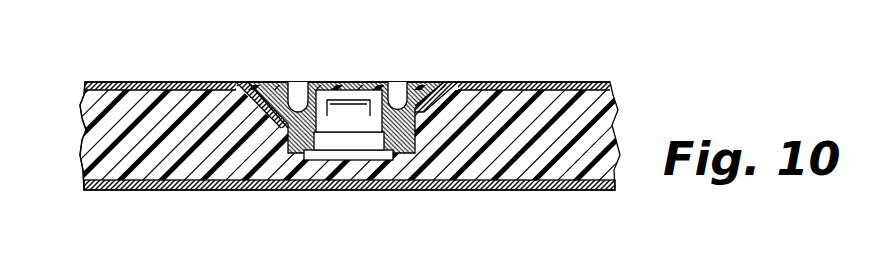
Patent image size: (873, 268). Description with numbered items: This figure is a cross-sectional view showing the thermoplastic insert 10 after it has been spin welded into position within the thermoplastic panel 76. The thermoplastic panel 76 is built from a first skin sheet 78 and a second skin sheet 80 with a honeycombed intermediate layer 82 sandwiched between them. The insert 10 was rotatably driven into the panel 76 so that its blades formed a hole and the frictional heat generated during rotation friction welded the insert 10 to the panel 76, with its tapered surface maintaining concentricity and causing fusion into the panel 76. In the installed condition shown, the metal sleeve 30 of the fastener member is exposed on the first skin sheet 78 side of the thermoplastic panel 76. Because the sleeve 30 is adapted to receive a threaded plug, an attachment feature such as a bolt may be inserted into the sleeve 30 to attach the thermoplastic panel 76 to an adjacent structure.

The thermoplastic insert 10 is at (434, 76).
The metal sleeve 30 is at (346, 105).
The thermoplastic panel 76 is at (105, 78).
The first skin sheet 78 is at (163, 82).
The second skin sheet 80 is at (143, 192).
The honeycombed intermediate layer 82 is at (80, 135).